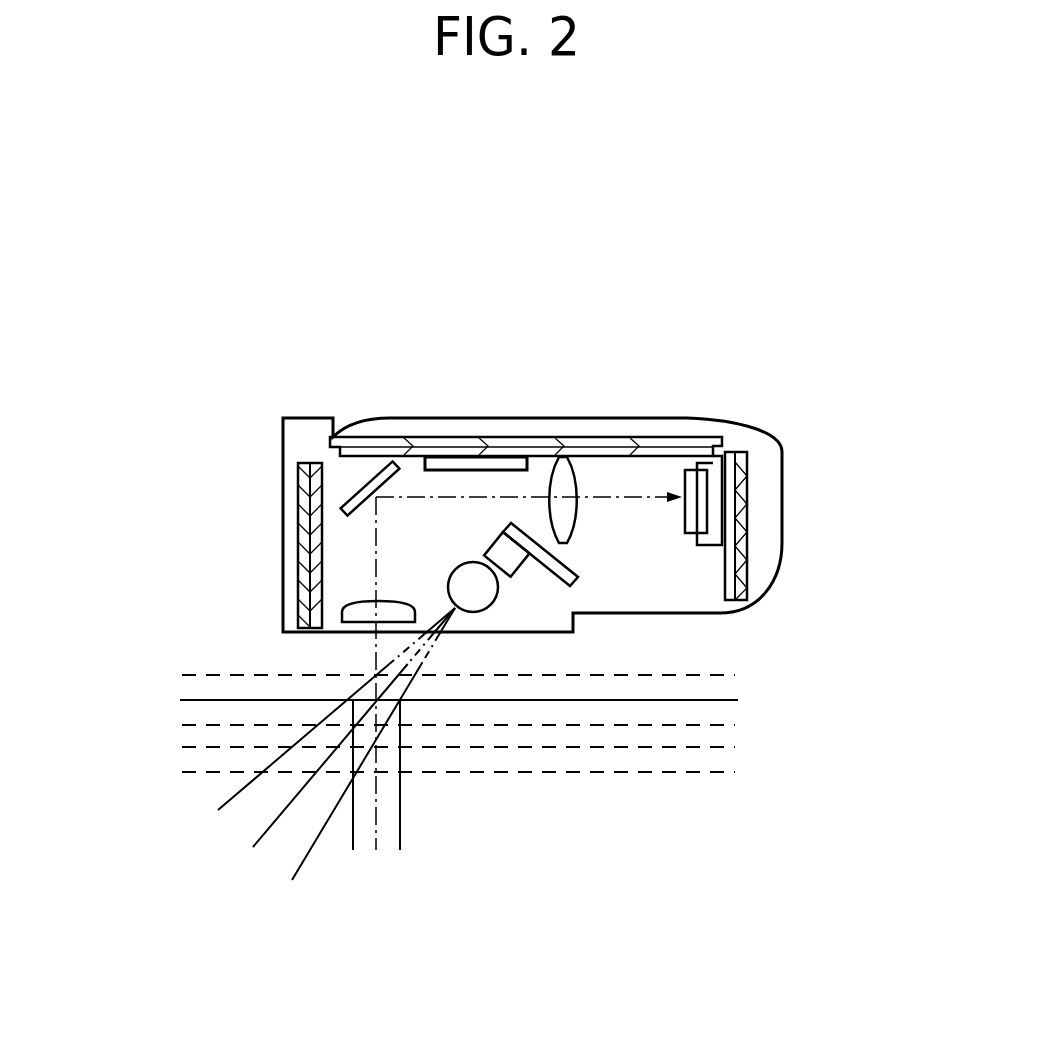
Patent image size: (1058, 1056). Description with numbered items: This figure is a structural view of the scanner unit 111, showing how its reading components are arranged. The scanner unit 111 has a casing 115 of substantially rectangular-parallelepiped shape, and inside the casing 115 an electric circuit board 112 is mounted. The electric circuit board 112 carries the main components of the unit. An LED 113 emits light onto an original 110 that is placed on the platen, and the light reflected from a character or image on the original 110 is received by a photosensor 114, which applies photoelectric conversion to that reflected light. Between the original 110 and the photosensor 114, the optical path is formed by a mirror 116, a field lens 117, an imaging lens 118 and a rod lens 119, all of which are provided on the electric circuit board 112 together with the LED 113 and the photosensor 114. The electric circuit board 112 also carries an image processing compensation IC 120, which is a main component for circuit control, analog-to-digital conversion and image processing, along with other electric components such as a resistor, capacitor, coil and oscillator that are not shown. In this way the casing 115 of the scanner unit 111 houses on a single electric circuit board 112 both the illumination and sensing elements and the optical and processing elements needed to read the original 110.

The original 110 is at (195, 700).
The scanner unit 111 is at (797, 432).
The electric circuit board 112 is at (315, 520).
The LED 113 is at (567, 560).
The photosensor 114 is at (693, 477).
The casing 115 is at (778, 530).
The mirror 116 is at (360, 490).
The field lens 117 is at (362, 602).
The imaging lens 118 is at (580, 477).
The rod lens 119 is at (483, 597).
The image processing compensation IC 120 is at (448, 462).